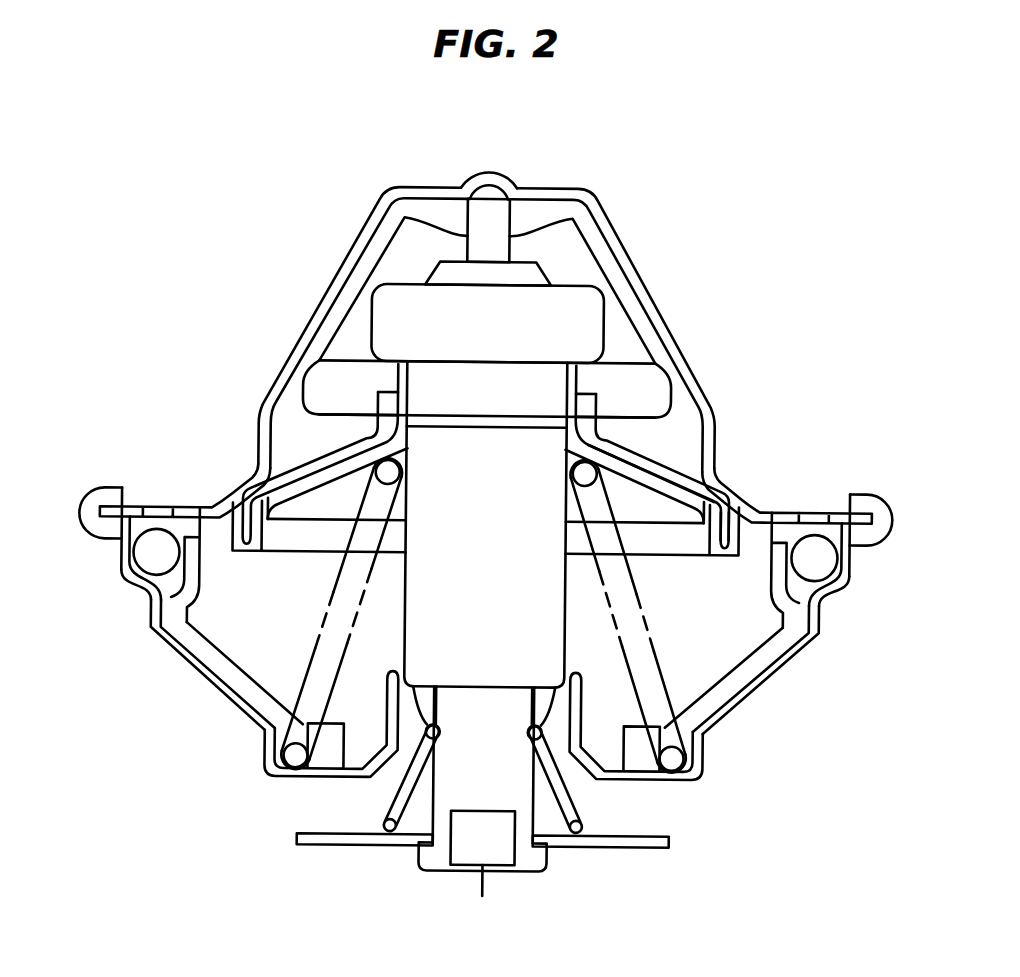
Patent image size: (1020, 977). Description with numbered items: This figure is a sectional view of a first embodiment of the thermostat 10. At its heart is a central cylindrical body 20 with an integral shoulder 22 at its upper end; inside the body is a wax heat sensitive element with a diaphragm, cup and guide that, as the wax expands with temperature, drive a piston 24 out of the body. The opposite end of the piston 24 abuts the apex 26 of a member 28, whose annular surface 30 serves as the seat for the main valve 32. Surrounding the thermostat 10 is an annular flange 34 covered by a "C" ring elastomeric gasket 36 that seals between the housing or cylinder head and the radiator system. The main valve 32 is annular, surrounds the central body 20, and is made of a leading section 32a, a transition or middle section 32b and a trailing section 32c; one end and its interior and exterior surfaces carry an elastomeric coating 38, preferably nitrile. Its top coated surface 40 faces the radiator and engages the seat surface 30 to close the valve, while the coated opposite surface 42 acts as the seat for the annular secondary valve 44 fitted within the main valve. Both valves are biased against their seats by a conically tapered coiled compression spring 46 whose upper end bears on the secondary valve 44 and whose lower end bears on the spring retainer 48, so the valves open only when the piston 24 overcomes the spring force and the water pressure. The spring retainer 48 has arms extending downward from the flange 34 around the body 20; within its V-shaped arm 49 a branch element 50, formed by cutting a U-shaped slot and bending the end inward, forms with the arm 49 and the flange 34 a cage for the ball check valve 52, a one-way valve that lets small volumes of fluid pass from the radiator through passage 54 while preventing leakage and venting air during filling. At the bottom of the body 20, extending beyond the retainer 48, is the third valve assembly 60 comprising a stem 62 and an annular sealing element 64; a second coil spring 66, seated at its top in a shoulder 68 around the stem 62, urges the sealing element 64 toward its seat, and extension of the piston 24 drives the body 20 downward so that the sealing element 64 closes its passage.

The thermostat 10 is at (682, 296).
The central cylindrical body 20 is at (562, 644).
The integral shoulder 22 is at (312, 368).
The piston 24 is at (494, 229).
The apex 26 is at (463, 181).
The member 28 is at (332, 278).
The annular surface 30 is at (237, 480).
The main valve 32 is at (249, 548).
The leading section 32a is at (728, 538).
The transition or middle section 32b is at (667, 470).
The trailing section 32c is at (596, 404).
The annular flange 34 is at (128, 503).
The elastomeric gasket 36 is at (88, 508).
The coating 38 is at (256, 556).
The top coated surface 40 is at (288, 478).
The opposite surface 42 is at (285, 524).
The secondary valve 44 is at (328, 498).
The coiled retaining compression spring 46 is at (636, 618).
The spring retainer 48 is at (275, 777).
The arm 49 is at (186, 688).
The branch element 50 is at (135, 588).
The ball check valve 52 is at (150, 550).
The passage 54 is at (152, 507).
The third valve assembly 60 is at (705, 841).
The stem 62 is at (443, 797).
The annular sealing element 64 is at (320, 841).
The second coil spring 66 is at (563, 796).
The shoulder 68 is at (528, 735).